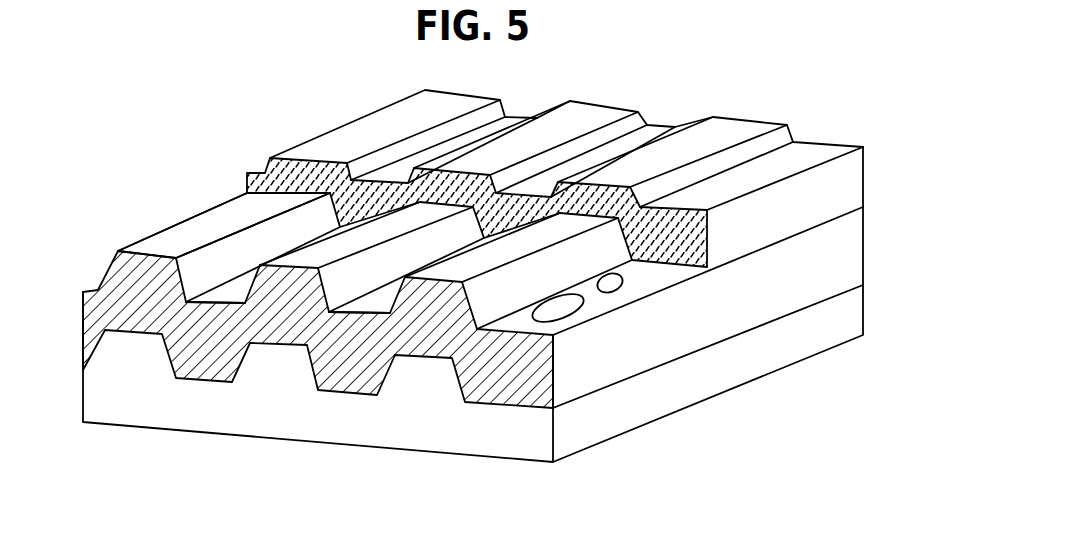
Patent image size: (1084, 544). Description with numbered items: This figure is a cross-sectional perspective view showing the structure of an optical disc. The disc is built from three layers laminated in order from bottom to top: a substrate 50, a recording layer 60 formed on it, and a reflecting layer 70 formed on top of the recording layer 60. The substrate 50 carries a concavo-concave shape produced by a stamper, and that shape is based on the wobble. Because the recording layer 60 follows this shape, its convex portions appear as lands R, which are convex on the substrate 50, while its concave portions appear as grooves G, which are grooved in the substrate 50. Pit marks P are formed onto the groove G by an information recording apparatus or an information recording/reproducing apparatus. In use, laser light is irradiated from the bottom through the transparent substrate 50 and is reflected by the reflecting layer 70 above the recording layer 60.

The substrate 50 is at (650, 402).
The recording layer 60 is at (813, 258).
The reflecting layer 70 is at (830, 190).
The land R is at (525, 243).
The groove G is at (437, 357).
The pit mark P is at (585, 310).